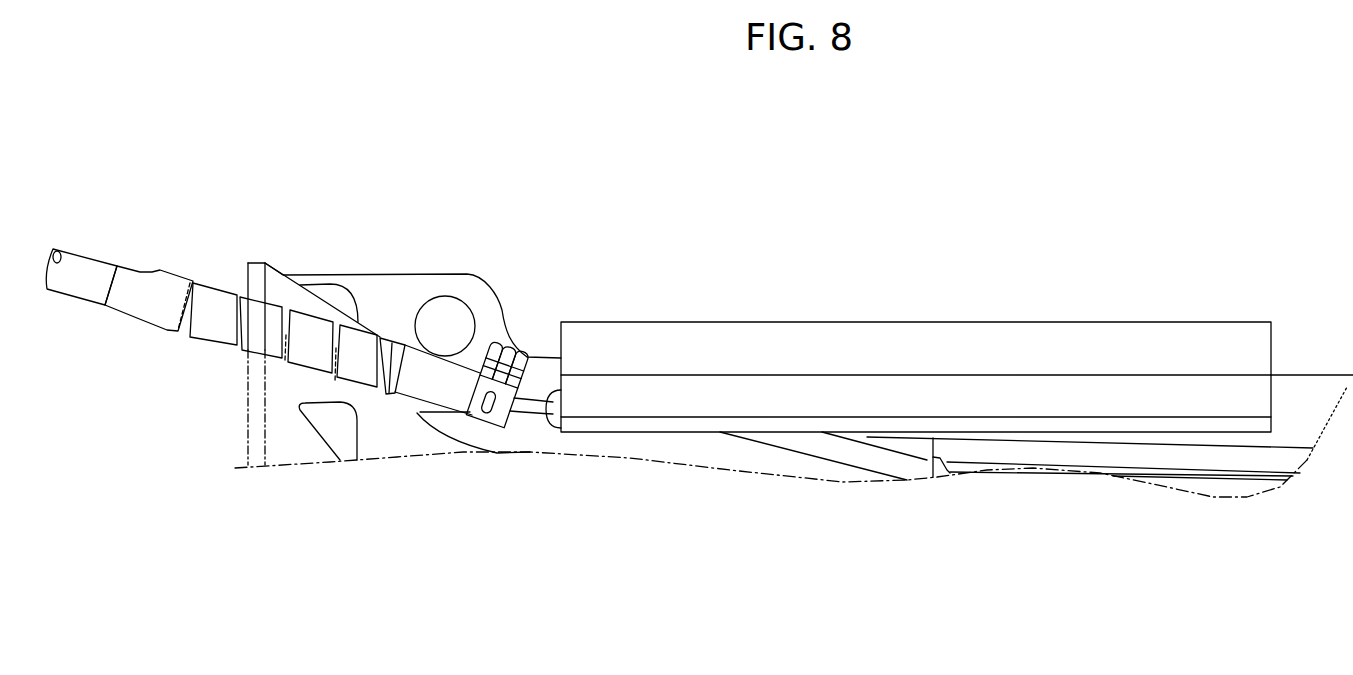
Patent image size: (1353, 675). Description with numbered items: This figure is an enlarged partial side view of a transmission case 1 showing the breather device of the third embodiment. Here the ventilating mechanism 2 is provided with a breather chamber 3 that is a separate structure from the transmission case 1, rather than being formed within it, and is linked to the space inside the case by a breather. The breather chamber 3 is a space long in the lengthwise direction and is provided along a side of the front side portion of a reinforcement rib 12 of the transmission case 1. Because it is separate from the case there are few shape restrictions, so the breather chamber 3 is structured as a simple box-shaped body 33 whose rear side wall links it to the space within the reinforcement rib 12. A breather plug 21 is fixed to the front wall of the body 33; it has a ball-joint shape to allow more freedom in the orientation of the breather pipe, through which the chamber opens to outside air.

The transmission case 1 is at (248, 442).
The ventilating mechanism 2 is at (212, 278).
The breather chamber 3 is at (916, 336).
The body 33 is at (1005, 322).
The reinforcement rib 12 is at (1303, 374).
The breather plug 21 is at (540, 420).